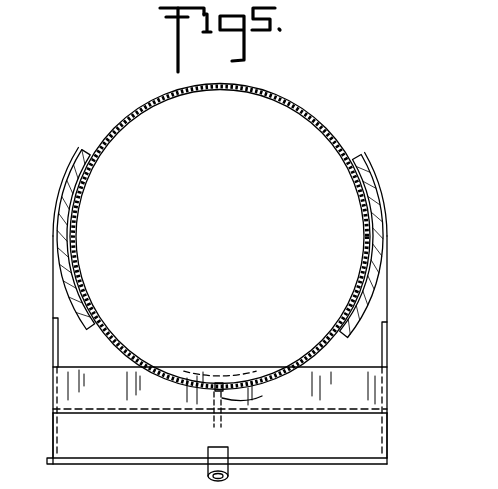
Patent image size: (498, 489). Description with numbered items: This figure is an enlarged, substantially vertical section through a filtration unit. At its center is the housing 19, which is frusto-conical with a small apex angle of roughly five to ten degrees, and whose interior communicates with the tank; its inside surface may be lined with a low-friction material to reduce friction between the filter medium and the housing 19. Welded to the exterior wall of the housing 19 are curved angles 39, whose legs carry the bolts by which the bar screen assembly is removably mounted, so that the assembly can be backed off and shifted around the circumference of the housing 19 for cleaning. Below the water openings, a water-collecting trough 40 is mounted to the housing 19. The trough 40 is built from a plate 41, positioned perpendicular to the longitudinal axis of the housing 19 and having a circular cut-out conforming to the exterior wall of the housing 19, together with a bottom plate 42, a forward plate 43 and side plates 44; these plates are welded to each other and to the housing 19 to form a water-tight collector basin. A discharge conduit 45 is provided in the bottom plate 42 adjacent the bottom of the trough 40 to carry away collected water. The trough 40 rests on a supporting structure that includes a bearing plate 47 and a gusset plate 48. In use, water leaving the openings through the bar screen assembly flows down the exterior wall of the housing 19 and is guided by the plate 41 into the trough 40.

The housing 19 is at (312, 115).
The curved angles 39 is at (73, 158).
The water-collecting trough 40 is at (360, 470).
The plate 41 is at (386, 267).
The bottom plate 42 is at (360, 443).
The forward plate 43 is at (357, 398).
The side plates 44 is at (50, 327).
The discharge conduit 45 is at (207, 450).
The bearing plate 47 is at (195, 373).
The gusset plate 48 is at (253, 400).